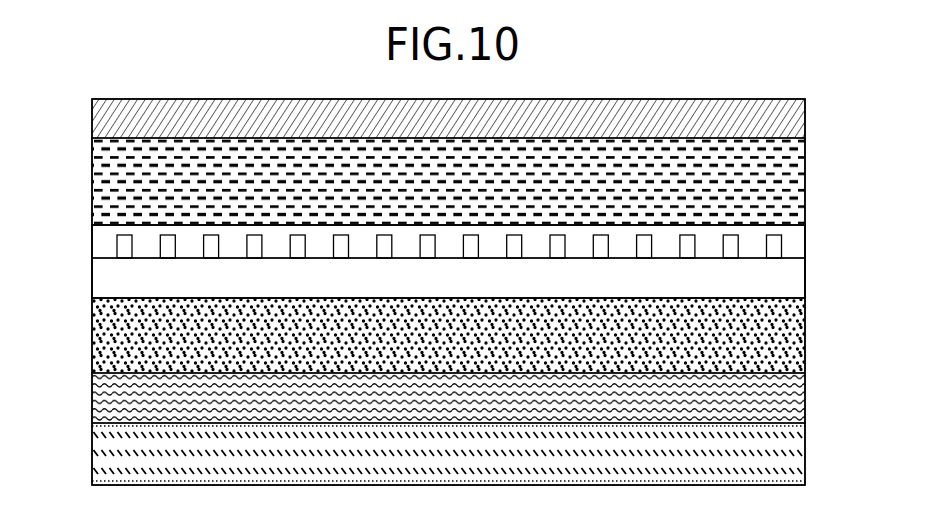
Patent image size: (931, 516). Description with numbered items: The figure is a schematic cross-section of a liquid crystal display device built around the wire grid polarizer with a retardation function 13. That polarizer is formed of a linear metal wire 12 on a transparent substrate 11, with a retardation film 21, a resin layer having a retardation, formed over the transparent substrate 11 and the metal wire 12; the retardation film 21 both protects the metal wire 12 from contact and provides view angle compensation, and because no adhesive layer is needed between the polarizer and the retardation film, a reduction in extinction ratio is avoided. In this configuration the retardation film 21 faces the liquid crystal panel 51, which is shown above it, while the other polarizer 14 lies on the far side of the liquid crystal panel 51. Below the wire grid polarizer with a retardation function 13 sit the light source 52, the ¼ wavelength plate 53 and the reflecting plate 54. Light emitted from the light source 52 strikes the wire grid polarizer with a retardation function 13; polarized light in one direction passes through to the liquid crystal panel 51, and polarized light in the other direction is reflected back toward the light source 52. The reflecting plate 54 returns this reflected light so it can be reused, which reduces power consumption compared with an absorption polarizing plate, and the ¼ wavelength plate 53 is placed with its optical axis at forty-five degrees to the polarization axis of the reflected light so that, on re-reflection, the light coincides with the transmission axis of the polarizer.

The other polarizer 14 is at (807, 119).
The liquid crystal panel 51 is at (807, 176).
The metal wire 12 is at (122, 248).
The retardation film 21 is at (91, 250).
The transparent substrate 11 is at (91, 279).
The wire grid polarizer with a retardation function 13 is at (815, 222).
The light source 52 is at (806, 333).
The ¼ wavelength plate 53 is at (806, 397).
The reflecting plate 54 is at (806, 453).